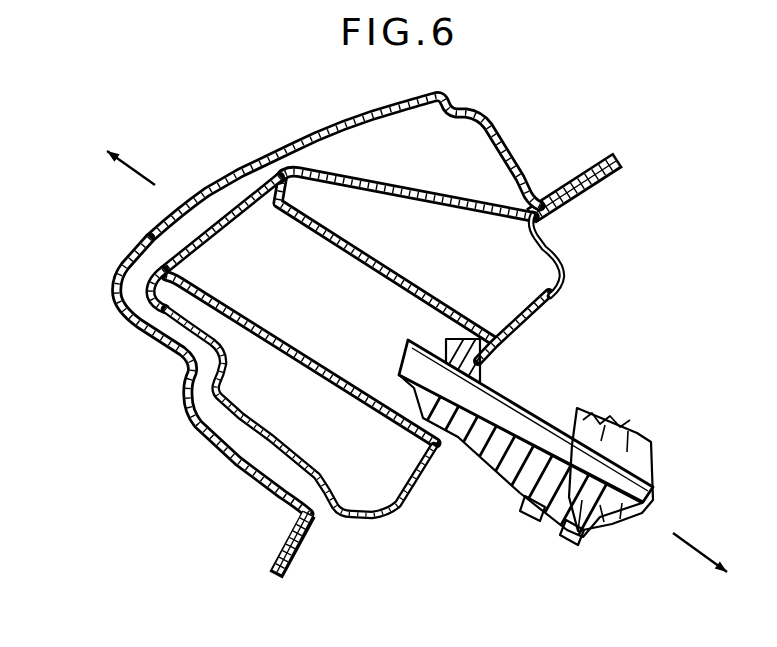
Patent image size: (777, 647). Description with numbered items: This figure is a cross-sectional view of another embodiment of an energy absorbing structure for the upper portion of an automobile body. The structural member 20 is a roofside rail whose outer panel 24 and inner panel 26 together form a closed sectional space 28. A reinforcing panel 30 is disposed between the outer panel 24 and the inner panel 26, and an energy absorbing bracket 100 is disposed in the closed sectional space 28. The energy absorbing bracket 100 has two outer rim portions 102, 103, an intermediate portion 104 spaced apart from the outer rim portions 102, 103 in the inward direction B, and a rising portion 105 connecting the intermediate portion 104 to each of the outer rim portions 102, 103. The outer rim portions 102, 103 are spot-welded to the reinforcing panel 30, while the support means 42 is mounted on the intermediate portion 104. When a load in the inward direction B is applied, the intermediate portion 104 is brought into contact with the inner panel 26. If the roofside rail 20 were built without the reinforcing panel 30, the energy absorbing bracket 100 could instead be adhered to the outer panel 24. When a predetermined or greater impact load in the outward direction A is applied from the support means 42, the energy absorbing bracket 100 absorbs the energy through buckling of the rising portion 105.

The structural member 20 is at (228, 154).
The outer panel 24 is at (153, 227).
The inner panel 26 is at (404, 505).
The closed sectional space 28 is at (520, 176).
The reinforcing panel 30 is at (350, 172).
The support means 42 is at (523, 493).
The energy absorbing bracket 100 is at (320, 388).
The outer rim portion 102 is at (165, 293).
The outer rim portion 103 is at (275, 163).
The intermediate portion 104 is at (496, 349).
The rising portion 105 is at (407, 283).
The outward direction A is at (143, 181).
The inward direction B is at (698, 557).